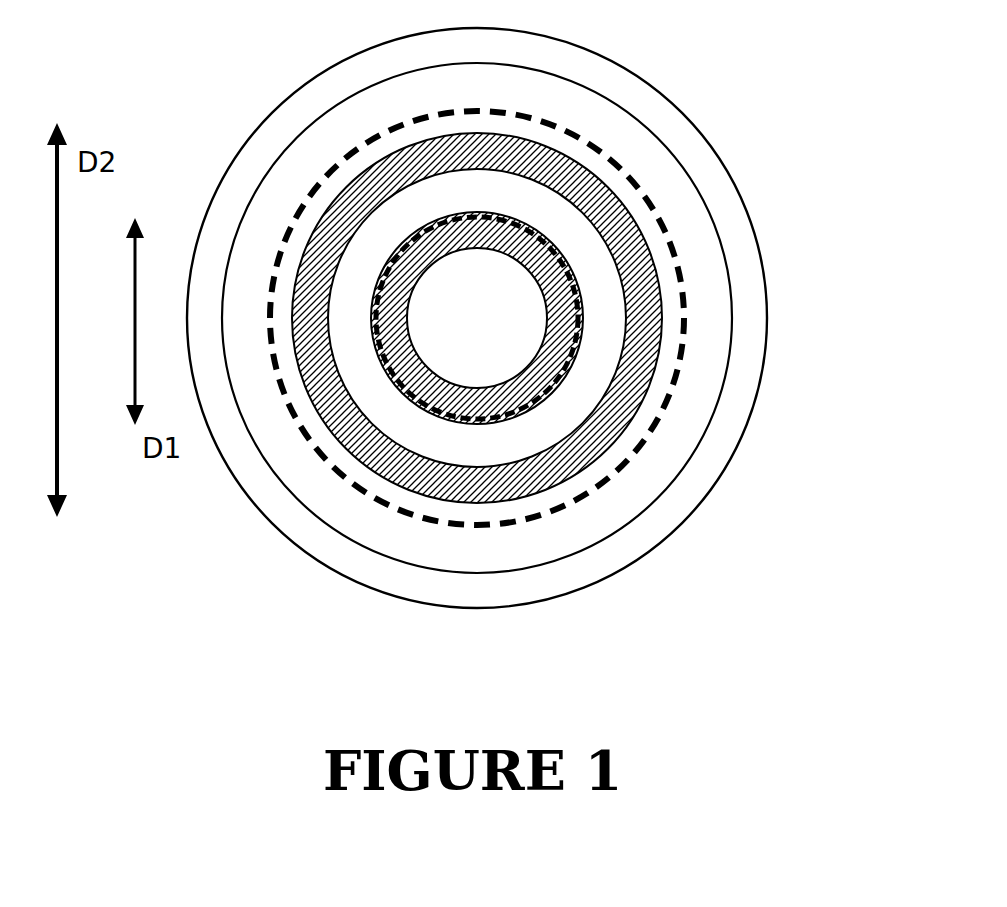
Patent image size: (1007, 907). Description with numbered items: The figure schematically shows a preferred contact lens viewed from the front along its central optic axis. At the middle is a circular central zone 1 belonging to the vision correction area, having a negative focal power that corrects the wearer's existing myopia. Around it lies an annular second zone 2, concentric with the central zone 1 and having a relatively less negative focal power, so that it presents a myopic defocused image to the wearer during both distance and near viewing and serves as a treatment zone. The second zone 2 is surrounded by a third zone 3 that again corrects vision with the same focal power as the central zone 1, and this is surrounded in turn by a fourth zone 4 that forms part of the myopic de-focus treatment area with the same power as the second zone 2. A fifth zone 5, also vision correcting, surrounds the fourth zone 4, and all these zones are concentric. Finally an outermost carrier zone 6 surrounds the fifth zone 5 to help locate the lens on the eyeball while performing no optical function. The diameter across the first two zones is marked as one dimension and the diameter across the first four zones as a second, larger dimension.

The central zone 1 is at (513, 300).
The second zone 2 is at (560, 330).
The third zone 3 is at (590, 365).
The fourth zone 4 is at (620, 418).
The fifth zone 5 is at (650, 478).
The carrier zone 6 is at (620, 562).